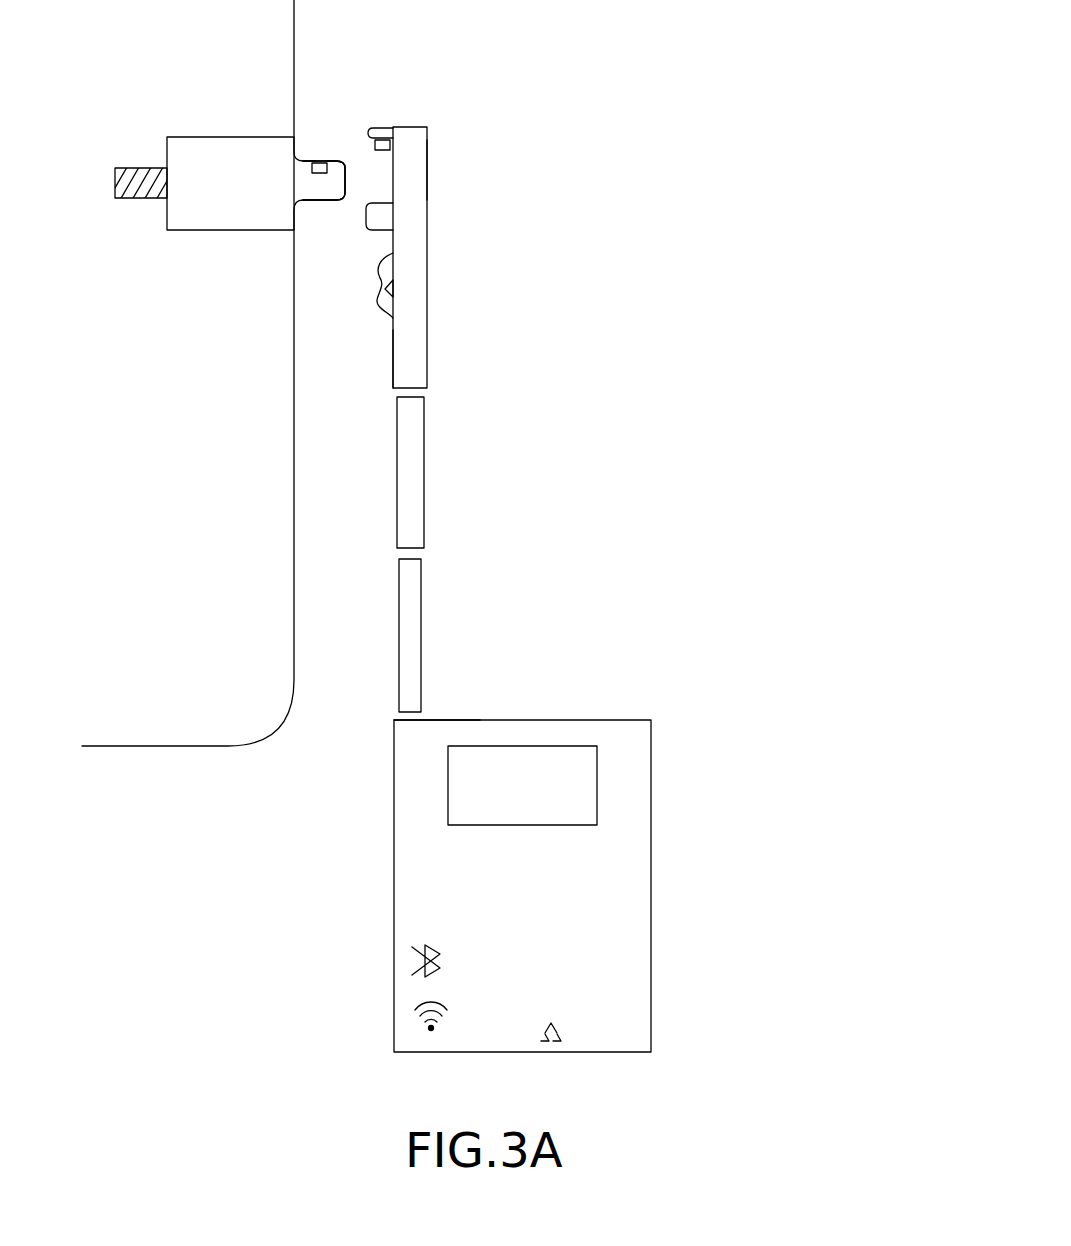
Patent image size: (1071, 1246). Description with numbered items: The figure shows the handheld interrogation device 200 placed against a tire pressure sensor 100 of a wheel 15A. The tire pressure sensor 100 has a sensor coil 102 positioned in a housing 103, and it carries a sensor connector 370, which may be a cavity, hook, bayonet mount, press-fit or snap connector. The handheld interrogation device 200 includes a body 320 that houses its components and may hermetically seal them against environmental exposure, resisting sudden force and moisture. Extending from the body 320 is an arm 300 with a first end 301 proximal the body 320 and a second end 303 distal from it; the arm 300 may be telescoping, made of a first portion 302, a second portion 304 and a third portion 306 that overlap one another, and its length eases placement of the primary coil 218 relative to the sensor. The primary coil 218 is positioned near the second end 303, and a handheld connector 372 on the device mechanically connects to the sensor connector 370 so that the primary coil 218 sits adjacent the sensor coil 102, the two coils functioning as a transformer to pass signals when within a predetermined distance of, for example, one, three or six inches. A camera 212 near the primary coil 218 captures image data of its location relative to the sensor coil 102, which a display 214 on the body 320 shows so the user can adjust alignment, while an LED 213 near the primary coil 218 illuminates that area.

The wheel 15A is at (193, 756).
The tire pressure sensor 100 is at (183, 136).
The sensor coil 102 is at (316, 190).
The housing 103 is at (347, 172).
The handheld interrogation device 200 is at (628, 66).
The camera 212 is at (393, 255).
The LED 213 is at (374, 222).
The display 214 is at (572, 762).
The primary coil 218 is at (427, 170).
The arm 300 is at (473, 473).
The first end 301 is at (436, 719).
The first portion 302 is at (422, 614).
The second end 303 is at (427, 127).
The second portion 304 is at (397, 498).
The third portion 306 is at (393, 352).
The body 320 is at (651, 893).
The sensor connector 370 is at (327, 162).
The handheld connector 372 is at (388, 146).